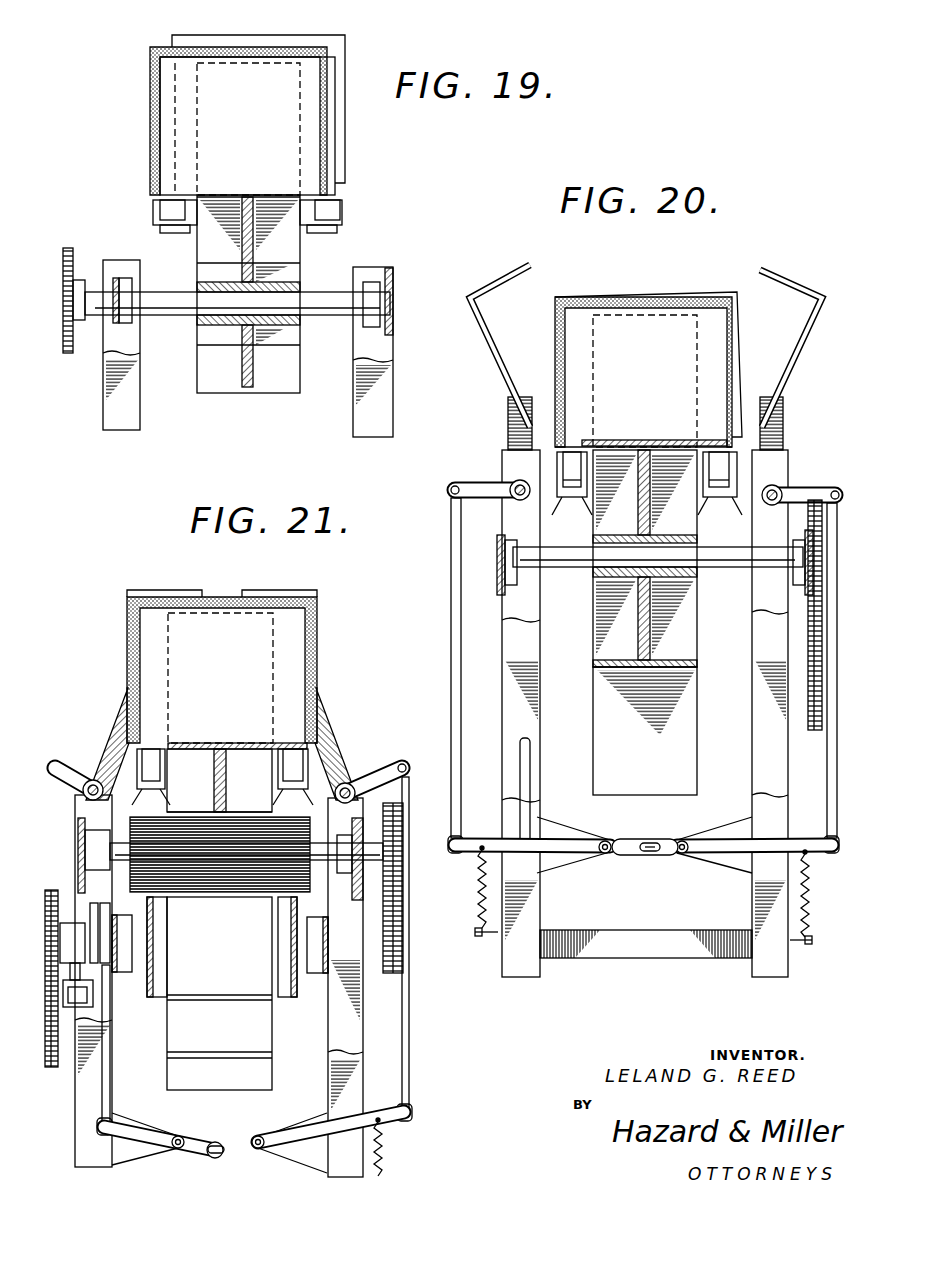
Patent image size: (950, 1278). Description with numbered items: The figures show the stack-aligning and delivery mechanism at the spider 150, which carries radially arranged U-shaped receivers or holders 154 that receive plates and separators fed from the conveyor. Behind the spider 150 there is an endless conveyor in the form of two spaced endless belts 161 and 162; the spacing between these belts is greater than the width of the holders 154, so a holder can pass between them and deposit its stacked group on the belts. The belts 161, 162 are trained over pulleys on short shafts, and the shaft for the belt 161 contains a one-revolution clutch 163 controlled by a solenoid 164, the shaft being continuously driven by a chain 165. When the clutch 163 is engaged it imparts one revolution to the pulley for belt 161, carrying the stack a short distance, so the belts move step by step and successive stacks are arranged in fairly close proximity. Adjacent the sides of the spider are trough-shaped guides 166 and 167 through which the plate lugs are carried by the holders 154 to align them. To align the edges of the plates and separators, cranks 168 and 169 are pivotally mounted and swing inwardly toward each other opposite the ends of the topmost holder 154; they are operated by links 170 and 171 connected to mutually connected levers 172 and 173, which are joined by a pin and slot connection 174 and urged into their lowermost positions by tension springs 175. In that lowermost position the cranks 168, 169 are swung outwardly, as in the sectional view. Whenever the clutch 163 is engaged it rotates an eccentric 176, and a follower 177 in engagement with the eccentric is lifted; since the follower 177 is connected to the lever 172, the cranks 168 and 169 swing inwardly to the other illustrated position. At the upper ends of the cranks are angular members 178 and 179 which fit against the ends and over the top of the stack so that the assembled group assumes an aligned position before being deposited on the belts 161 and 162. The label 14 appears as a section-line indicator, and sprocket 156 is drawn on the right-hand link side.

In FIG. 21, the section line indicator 14 is at (90, 885).
In FIG. 19, the spider 150 is at (305, 273).
In FIG. 20, the spider 150 is at (700, 602).
In FIG. 21, the spider 150 is at (165, 1074).
In FIG. 19, the U-shaped receiver or holder 154 is at (300, 155).
In FIG. 20, the U-shaped receiver or holder 154 is at (697, 360).
In FIG. 21, the U-shaped receiver or holder 154 is at (273, 655).
In FIG. 20, the sprocket 156 is at (810, 672).
In FIG. 21, the endless belt 161 is at (158, 1003).
In FIG. 21, the endless belt 162 is at (290, 1000).
In FIG. 21, the one-revolution clutch 163 is at (73, 925).
In FIG. 21, the solenoid 164 is at (83, 997).
In FIG. 21, the chain 165 is at (52, 1067).
In FIG. 19, the trough-shaped guide 166 is at (342, 217).
In FIG. 20, the trough-shaped guide 166 is at (572, 490).
In FIG. 21, the trough-shaped guide 166 is at (155, 783).
In FIG. 19, the trough-shaped guide 167 is at (153, 212).
In FIG. 20, the trough-shaped guide 167 is at (725, 490).
In FIG. 21, the trough-shaped guide 167 is at (290, 787).
In FIG. 20, the crank 168 is at (506, 447).
In FIG. 21, the crank 168 is at (105, 752).
In FIG. 20, the crank 169 is at (783, 452).
In FIG. 21, the crank 169 is at (330, 748).
In FIG. 20, the link 170 is at (455, 690).
In FIG. 21, the link 170 is at (450, 692).
In FIG. 20, the link 171 is at (835, 760).
In FIG. 21, the link 171 is at (408, 1017).
In FIG. 20, the lever 172 is at (575, 840).
In FIG. 21, the lever 172 is at (168, 1135).
In FIG. 20, the lever 173 is at (722, 838).
In FIG. 21, the lever 173 is at (285, 1135).
In FIG. 20, the pin and slot connection 174 is at (648, 855).
In FIG. 21, the pin and slot connection 174 is at (218, 1146).
In FIG. 20, the tension spring 175 is at (480, 890).
In FIG. 21, the tension spring 175 is at (388, 1152).
In FIG. 21, the eccentric 176 is at (95, 955).
In FIG. 20, the follower 177 is at (530, 768).
In FIG. 21, the follower 177 is at (110, 1065).
In FIG. 20, the angular member 178 is at (503, 276).
In FIG. 21, the angular member 178 is at (138, 590).
In FIG. 20, the angular member 179 is at (792, 288).
In FIG. 21, the angular member 179 is at (318, 617).